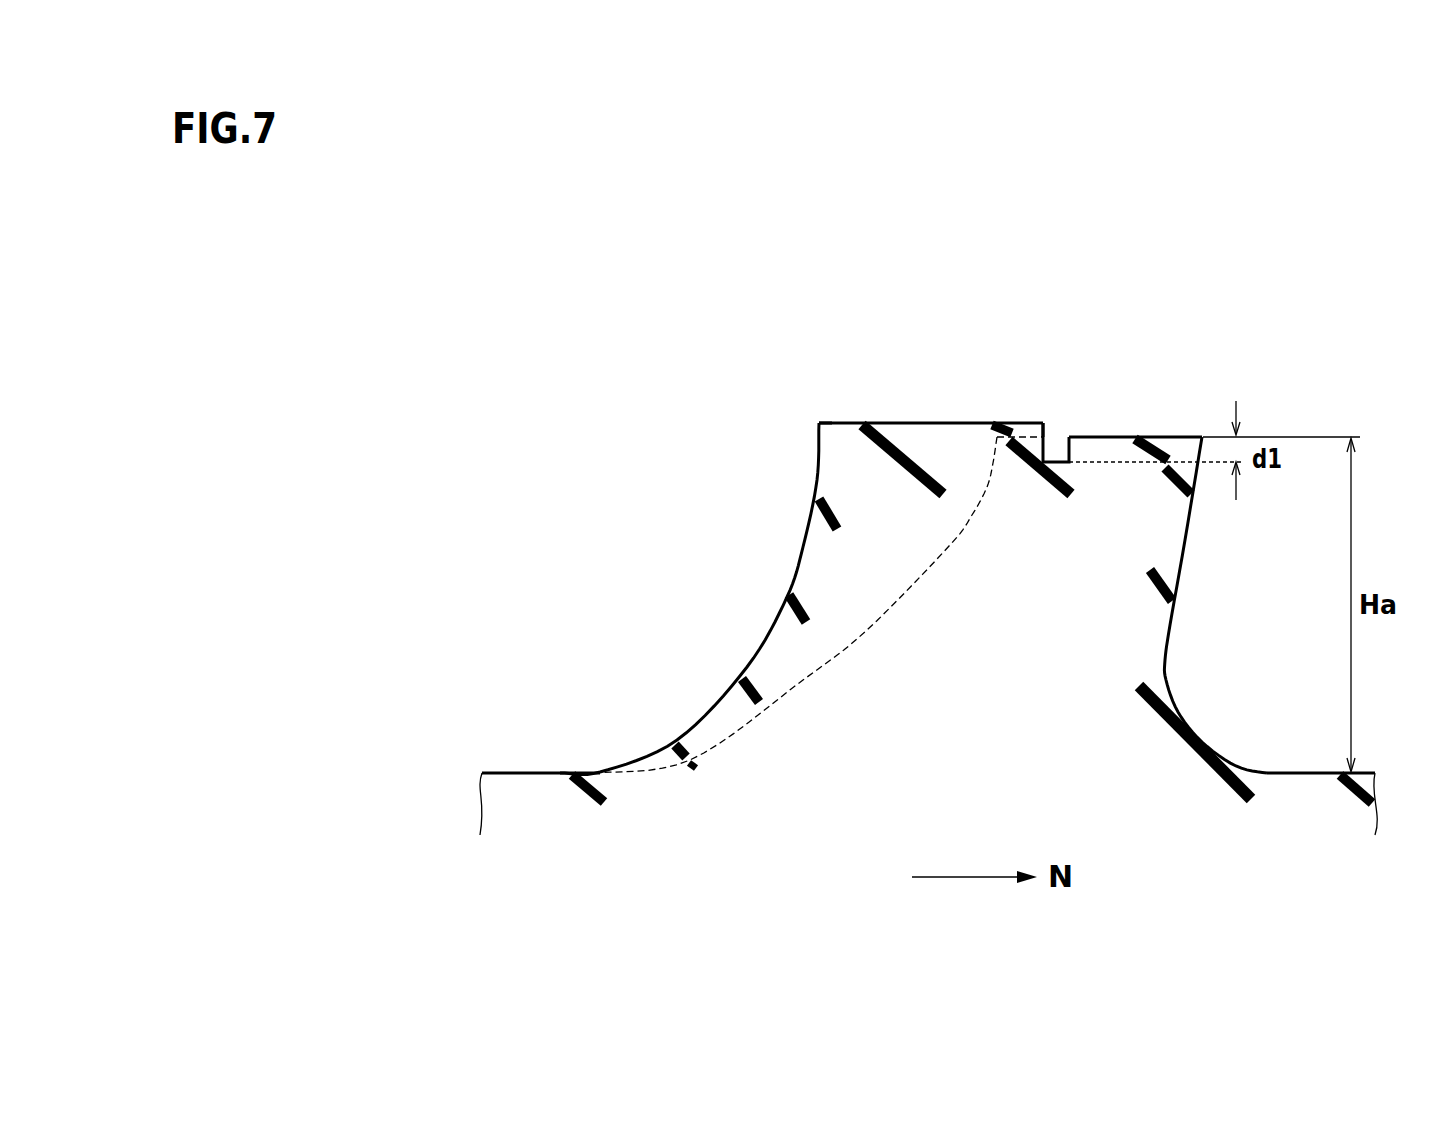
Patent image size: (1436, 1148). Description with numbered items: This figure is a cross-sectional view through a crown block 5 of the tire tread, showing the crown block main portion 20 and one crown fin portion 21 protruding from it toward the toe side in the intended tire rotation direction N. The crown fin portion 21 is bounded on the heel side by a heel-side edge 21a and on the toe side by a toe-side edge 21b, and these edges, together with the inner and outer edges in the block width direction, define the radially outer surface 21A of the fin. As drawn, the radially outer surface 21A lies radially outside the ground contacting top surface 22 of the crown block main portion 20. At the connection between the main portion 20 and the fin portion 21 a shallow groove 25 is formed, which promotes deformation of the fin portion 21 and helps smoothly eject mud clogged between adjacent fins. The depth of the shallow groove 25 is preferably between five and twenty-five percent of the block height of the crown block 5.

The crown block 5 is at (918, 280).
The crown block main portion 20 is at (1149, 395).
The crown fin portion 21 is at (760, 565).
The radially outer surface 21A is at (852, 420).
The heel-side edge 21a is at (1042, 420).
The toe-side edge 21b is at (819, 421).
The ground contacting top surface 22 is at (1098, 434).
The shallow groove 25 is at (1056, 430).